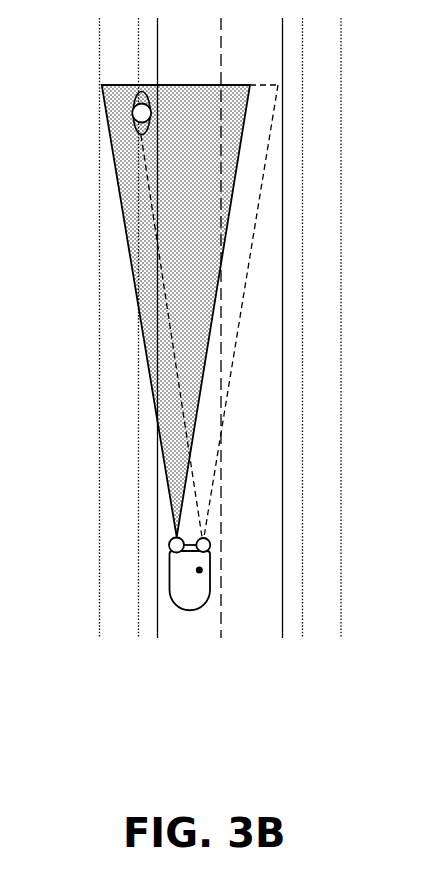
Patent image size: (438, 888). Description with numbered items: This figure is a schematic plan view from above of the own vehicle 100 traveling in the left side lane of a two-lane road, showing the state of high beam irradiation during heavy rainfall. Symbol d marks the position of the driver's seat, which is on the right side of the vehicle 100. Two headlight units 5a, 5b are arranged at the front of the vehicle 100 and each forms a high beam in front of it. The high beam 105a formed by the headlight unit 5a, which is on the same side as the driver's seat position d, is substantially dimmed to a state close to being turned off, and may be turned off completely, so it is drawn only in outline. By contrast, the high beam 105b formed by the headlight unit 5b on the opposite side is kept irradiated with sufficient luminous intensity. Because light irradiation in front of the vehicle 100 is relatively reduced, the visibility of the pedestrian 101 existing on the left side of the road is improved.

The pedestrian 101 is at (133, 112).
The high beam 105a is at (237, 290).
The high beam 105b is at (148, 320).
The headlight unit 5a is at (210, 545).
The headlight unit 5b is at (168, 544).
The driver's seat position d is at (203, 572).
The vehicle 100 is at (190, 612).